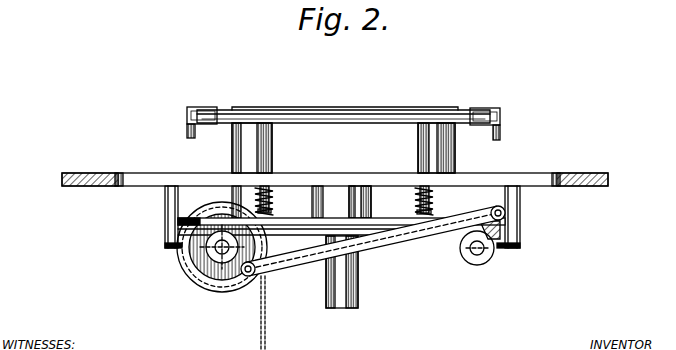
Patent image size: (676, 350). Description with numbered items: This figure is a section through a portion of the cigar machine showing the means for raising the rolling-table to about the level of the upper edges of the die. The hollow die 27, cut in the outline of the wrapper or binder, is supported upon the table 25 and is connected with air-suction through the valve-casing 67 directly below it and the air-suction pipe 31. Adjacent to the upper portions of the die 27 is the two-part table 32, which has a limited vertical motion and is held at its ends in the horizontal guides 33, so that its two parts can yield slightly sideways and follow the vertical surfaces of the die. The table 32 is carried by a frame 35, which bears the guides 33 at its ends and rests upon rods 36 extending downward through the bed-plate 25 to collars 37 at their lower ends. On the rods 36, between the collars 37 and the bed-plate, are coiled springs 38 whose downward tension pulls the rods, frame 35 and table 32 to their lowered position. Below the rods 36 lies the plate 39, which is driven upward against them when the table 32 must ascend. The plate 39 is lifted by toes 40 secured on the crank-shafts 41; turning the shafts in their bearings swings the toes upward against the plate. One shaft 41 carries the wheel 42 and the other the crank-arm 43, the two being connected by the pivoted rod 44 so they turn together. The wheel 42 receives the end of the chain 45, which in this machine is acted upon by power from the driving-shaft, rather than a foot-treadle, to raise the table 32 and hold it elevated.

The table 25 is at (335, 170).
The die 27 is at (333, 150).
The air-suction pipe 31 is at (353, 272).
The two-part table 32 is at (398, 109).
The horizontal guides 33 is at (197, 107).
The frame 35 is at (487, 141).
The rods 36 is at (343, 148).
The collars 37 is at (275, 216).
The coiled springs 38 is at (256, 198).
The plate 39 is at (394, 226).
The toes 40 is at (188, 252).
The crank-shafts 41 is at (218, 262).
The wheel 42 is at (244, 278).
The crank-arm 43 is at (507, 222).
The pivoted rod 44 is at (304, 262).
The chain 45 is at (274, 313).
The valve-casing 67 is at (342, 217).